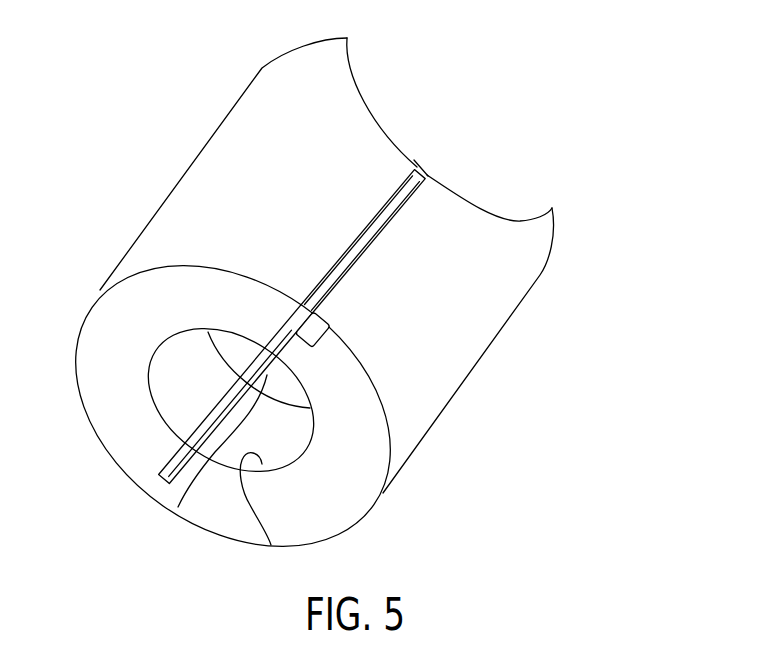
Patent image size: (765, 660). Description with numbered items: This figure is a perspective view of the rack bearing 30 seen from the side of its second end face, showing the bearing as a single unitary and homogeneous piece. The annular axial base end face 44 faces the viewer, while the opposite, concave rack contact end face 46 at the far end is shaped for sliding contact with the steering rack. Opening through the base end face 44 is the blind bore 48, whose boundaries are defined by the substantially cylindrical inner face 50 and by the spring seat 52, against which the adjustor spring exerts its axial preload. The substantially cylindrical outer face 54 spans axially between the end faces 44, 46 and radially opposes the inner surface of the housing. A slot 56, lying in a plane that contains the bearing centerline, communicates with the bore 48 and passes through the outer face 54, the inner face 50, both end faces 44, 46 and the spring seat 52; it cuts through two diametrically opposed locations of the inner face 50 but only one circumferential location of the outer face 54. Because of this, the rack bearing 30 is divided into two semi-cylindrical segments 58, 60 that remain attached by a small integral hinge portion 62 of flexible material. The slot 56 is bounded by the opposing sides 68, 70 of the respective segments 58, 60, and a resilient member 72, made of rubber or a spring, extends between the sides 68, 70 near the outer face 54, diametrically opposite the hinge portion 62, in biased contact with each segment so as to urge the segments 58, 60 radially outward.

The rack bearing 30 is at (301, 321).
The axial base end face 44 is at (108, 422).
The rack contact end face 46 is at (369, 115).
The bore 48 is at (207, 391).
The inner face 50 is at (271, 545).
The spring seat 52 is at (178, 507).
The outer face 54 is at (181, 181).
The slot 56 is at (423, 163).
The semi-cylindrical segment 58 is at (132, 220).
The semi-cylindrical segment 60 is at (480, 386).
The hinge portion 62 is at (143, 490).
The side 68 is at (348, 271).
The side 70 is at (378, 225).
The resilient member 72 is at (320, 355).